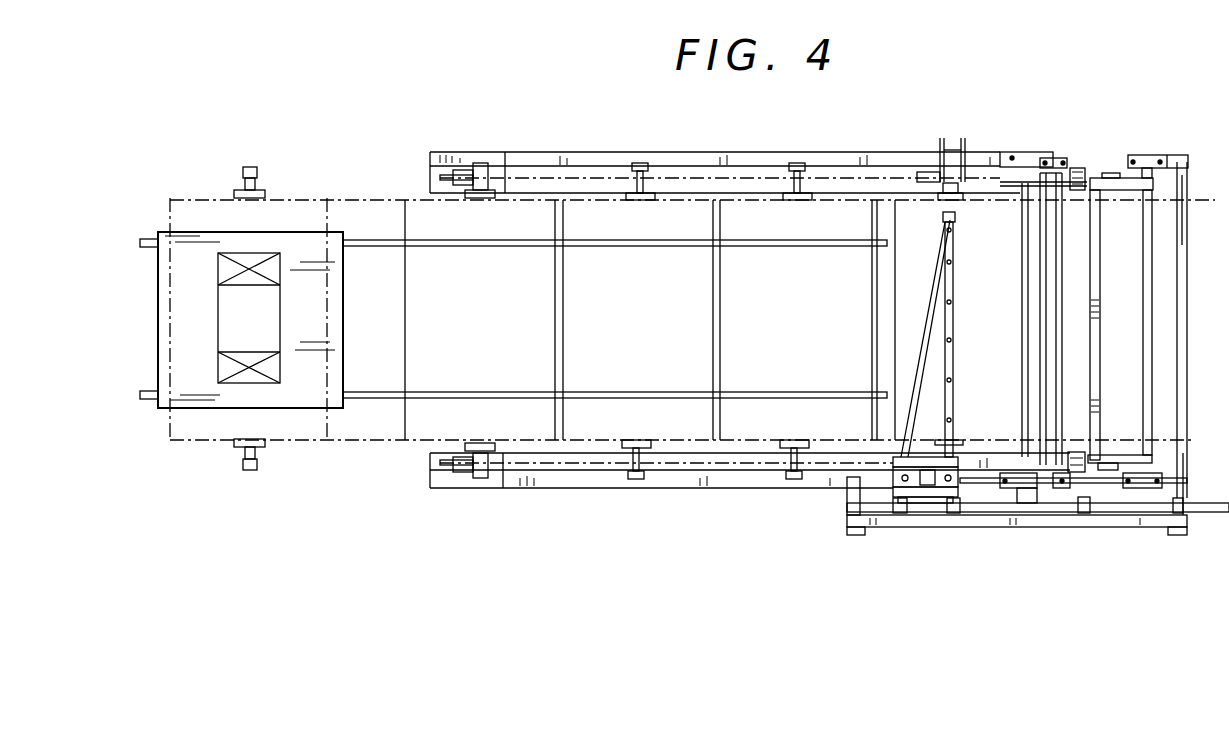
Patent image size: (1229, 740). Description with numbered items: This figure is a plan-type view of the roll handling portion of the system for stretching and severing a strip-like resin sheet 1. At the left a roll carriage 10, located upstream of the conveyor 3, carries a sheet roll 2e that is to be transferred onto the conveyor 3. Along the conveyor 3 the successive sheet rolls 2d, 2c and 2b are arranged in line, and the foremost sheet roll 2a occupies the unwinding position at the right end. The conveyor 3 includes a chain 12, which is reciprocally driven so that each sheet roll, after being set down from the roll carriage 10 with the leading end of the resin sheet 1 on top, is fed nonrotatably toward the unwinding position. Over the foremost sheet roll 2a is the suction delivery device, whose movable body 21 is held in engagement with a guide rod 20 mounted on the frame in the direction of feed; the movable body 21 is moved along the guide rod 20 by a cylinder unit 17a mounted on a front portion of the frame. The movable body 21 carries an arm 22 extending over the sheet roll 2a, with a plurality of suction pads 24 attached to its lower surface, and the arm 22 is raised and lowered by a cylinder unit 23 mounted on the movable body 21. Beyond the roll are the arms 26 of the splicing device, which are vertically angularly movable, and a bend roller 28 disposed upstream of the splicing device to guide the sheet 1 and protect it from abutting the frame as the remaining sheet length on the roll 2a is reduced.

The strip-like resin sheet 1 is at (1115, 220).
The foremost sheet roll 2a is at (893, 225).
The sheet roll 2b is at (830, 215).
The sheet roll 2c is at (690, 430).
The sheet roll 2d is at (420, 213).
The sheet roll 2e is at (190, 207).
The conveyor 3 is at (590, 188).
The roll carriage 10 is at (162, 400).
The chain 12 is at (672, 178).
The cylinder unit 17a is at (1125, 510).
The guide rod 20 is at (1035, 522).
The movable body 21 is at (938, 495).
The arm 22 is at (952, 283).
The cylinder unit 23 is at (925, 480).
The suction pads 24 is at (954, 341).
The arms 26 is at (1138, 183).
The bend roller 28 is at (1052, 290).